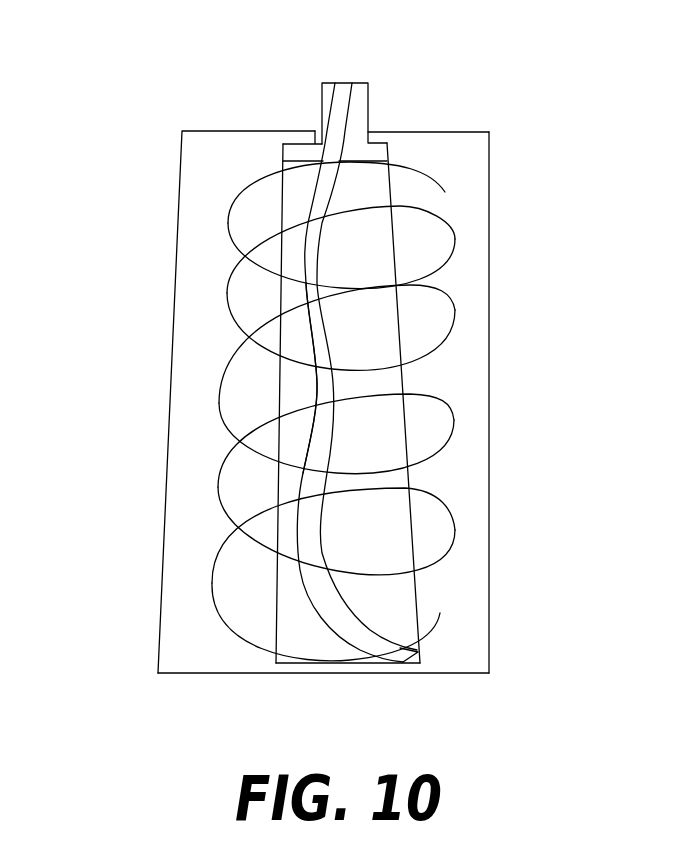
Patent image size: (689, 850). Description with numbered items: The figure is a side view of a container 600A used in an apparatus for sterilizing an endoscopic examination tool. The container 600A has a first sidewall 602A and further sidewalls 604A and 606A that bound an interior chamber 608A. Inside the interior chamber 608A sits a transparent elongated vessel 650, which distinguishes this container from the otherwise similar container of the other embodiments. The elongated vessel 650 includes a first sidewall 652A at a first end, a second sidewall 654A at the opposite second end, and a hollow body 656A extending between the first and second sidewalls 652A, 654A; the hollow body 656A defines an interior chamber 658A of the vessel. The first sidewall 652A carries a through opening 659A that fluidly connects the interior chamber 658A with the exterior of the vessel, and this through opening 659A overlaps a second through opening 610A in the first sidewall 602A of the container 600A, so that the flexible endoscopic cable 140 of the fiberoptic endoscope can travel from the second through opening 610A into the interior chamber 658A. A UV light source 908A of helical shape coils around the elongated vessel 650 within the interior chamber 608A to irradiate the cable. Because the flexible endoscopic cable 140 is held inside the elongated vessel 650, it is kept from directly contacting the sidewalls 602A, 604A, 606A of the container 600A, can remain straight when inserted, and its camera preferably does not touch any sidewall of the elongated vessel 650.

The flexible endoscopic cable 140 is at (318, 393).
The container 600A is at (382, 394).
The first sidewall of the container 602A is at (453, 132).
The sidewall of the container 604A is at (455, 673).
The sidewall of the container 606A is at (490, 623).
The interior chamber of the container 608A is at (330, 442).
The second through opening 610A is at (235, 337).
The transparent elongated vessel 650 is at (419, 411).
The first sidewall of the elongated vessel 652A is at (297, 142).
The second sidewall of the elongated vessel 654A is at (368, 665).
The hollow body 656A is at (417, 585).
The interior chamber of the elongated vessel 658A is at (293, 593).
The through opening 659A is at (357, 140).
The UV light source 908A is at (451, 524).